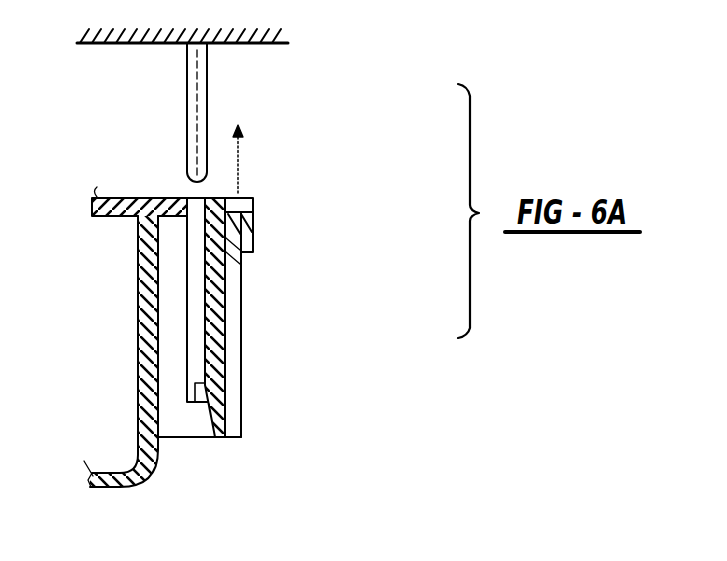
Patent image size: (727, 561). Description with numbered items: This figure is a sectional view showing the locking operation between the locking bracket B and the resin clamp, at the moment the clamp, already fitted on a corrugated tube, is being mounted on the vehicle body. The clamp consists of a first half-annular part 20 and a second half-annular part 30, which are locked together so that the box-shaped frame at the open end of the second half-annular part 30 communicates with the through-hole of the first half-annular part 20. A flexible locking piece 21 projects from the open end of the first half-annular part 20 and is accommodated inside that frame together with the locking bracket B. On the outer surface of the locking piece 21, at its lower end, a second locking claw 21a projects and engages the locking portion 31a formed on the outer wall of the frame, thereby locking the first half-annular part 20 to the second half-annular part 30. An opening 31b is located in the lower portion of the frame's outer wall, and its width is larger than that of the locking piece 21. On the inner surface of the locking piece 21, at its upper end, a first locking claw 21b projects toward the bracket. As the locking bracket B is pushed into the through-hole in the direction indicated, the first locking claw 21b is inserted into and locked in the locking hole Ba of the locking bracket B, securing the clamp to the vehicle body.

The first half-annular part 20 is at (137, 345).
The locking piece 21 is at (220, 410).
The second locking claw 21a is at (232, 262).
The first locking claw 21b is at (196, 388).
The second half-annular part 30 is at (122, 197).
The locking portion 31a is at (232, 242).
The opening 31b is at (232, 348).
The locking bracket B is at (208, 114).
The locking hole Ba is at (187, 138).